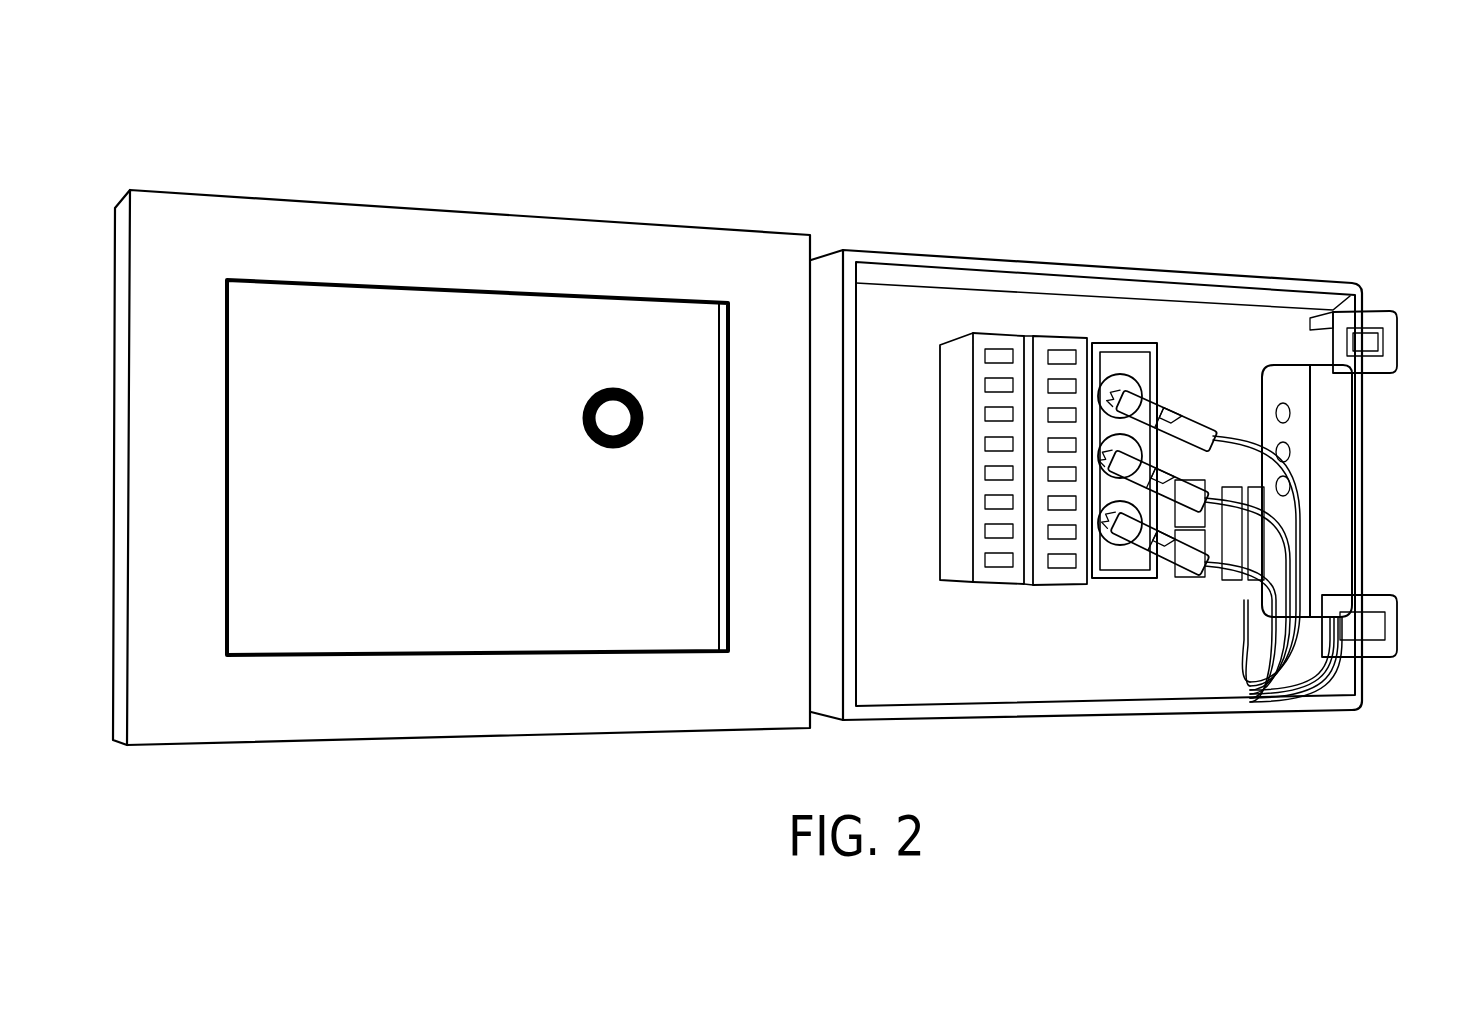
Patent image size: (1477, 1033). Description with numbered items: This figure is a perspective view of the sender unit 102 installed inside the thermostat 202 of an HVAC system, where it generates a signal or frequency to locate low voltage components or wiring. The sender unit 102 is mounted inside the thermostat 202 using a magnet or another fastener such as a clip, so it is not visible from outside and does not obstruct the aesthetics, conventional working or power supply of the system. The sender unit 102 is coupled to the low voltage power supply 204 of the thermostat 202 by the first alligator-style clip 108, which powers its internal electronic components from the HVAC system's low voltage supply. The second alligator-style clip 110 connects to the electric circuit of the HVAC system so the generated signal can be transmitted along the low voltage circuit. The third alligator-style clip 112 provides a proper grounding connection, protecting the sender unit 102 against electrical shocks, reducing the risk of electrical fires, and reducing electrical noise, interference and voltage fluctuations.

The thermostat 202 is at (768, 224).
The low voltage power supply 204 is at (1118, 346).
The first alligator-style clip 108 is at (1130, 578).
The second alligator-style clip 110 is at (1162, 414).
The third alligator-style clip 112 is at (1190, 430).
The sender unit 102 is at (1318, 492).